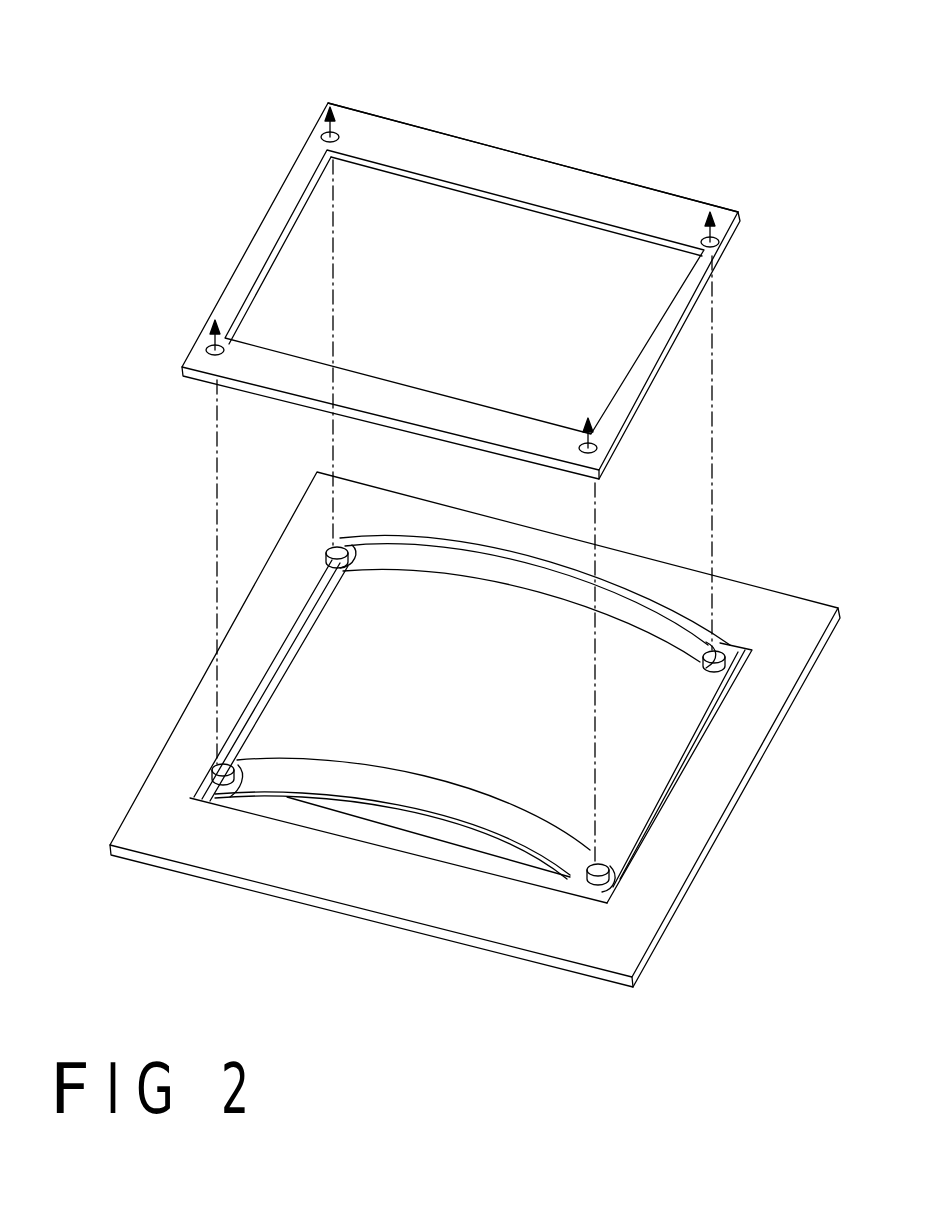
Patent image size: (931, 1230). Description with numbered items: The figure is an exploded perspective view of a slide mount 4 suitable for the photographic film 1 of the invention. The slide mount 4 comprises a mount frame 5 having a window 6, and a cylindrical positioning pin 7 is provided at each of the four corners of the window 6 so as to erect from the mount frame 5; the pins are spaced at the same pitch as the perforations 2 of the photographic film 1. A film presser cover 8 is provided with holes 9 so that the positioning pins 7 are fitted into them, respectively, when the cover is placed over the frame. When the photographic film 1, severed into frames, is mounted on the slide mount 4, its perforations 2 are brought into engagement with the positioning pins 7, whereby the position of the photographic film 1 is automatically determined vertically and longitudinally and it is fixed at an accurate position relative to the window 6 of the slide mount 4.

The photographic film 1 is at (375, 782).
The perforations 2 is at (356, 545).
The slide mount 4 is at (415, 122).
The mount frame 5 is at (790, 595).
The window 6 is at (470, 196).
The positioning pin 7 is at (327, 551).
The film presser cover 8 is at (611, 192).
The holes 9 is at (322, 137).